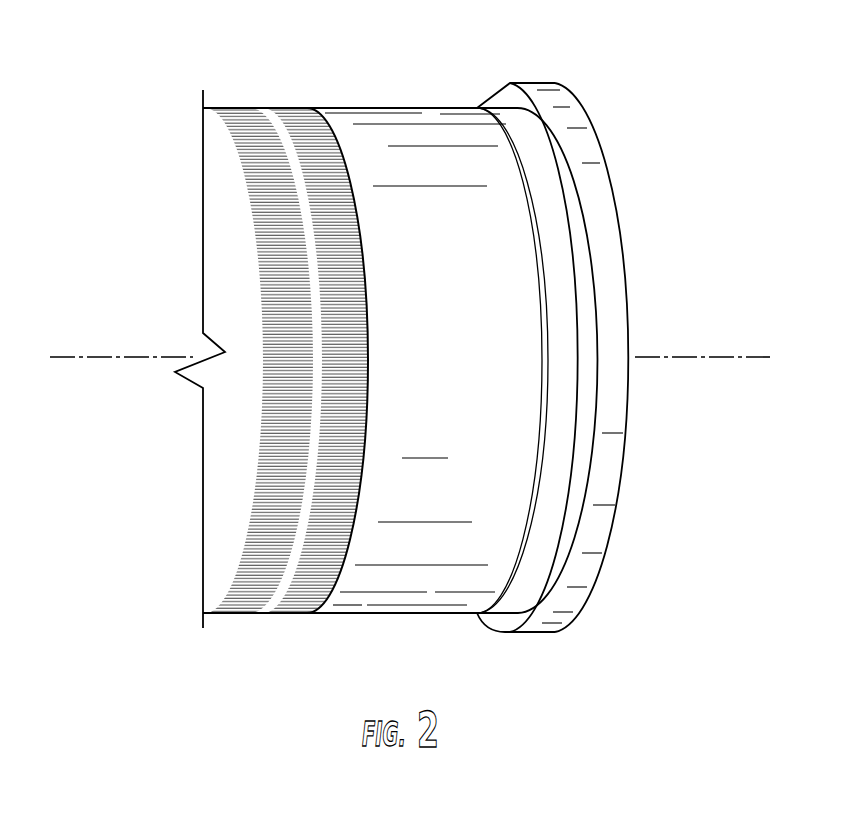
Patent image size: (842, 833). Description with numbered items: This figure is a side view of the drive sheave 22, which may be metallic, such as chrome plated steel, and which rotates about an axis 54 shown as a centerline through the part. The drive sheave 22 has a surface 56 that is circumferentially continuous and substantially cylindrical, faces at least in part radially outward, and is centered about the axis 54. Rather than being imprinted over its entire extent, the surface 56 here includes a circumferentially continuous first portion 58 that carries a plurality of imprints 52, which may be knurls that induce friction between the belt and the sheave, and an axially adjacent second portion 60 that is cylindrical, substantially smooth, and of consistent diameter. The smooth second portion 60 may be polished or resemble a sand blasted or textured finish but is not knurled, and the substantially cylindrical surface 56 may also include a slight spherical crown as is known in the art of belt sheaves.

The drive sheave 22 is at (641, 63).
The imprints 52 is at (295, 102).
The axis 54 is at (718, 357).
The surface 56 is at (232, 100).
The first portion 58 is at (281, 104).
The second portion 60 is at (440, 96).